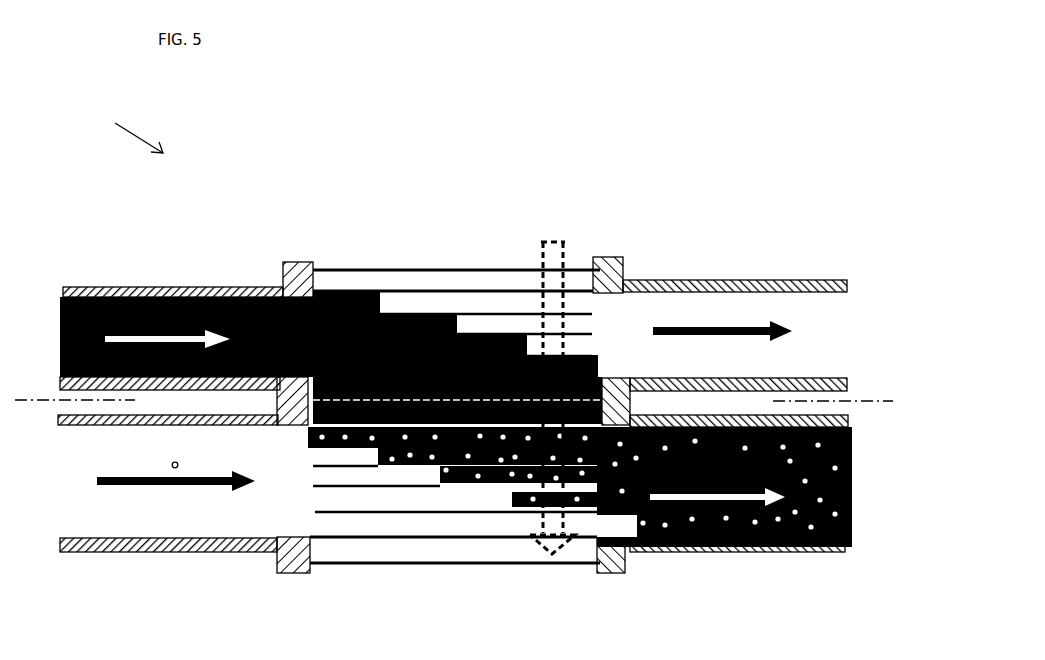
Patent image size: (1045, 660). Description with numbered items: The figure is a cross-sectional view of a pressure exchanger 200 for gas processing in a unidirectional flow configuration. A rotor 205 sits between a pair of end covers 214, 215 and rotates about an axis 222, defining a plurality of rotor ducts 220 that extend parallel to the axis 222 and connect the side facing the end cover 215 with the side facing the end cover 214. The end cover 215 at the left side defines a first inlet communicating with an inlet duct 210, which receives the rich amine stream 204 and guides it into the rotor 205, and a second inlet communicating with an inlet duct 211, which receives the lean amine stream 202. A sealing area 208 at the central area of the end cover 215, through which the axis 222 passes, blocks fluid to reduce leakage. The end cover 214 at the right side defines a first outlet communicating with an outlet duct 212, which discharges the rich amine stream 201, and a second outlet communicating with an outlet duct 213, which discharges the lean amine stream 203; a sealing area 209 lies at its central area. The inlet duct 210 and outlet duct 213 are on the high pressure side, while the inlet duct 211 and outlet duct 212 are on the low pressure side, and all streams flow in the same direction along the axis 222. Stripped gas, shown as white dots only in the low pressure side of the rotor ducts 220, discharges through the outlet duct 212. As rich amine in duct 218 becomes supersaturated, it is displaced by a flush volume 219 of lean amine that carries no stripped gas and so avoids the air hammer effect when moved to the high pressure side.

The pressure exchanger 200 is at (104, 127).
The rich amine stream 201 is at (850, 498).
The lean amine stream 202 is at (58, 490).
The lean amine stream 203 is at (838, 348).
The rich amine stream 204 is at (60, 346).
The rotor 205 is at (392, 268).
The sealing area 208 is at (277, 403).
The sealing area 209 is at (631, 393).
The inlet duct 210 is at (182, 289).
The inlet duct 211 is at (170, 553).
The outlet duct 212 is at (695, 553).
The outlet duct 213 is at (741, 280).
The end cover 214 is at (593, 258).
The end cover 215 is at (312, 262).
The duct 218 is at (580, 358).
The flush volume 219 is at (575, 530).
The rotor ducts 220 is at (443, 280).
The axis 222 is at (890, 405).